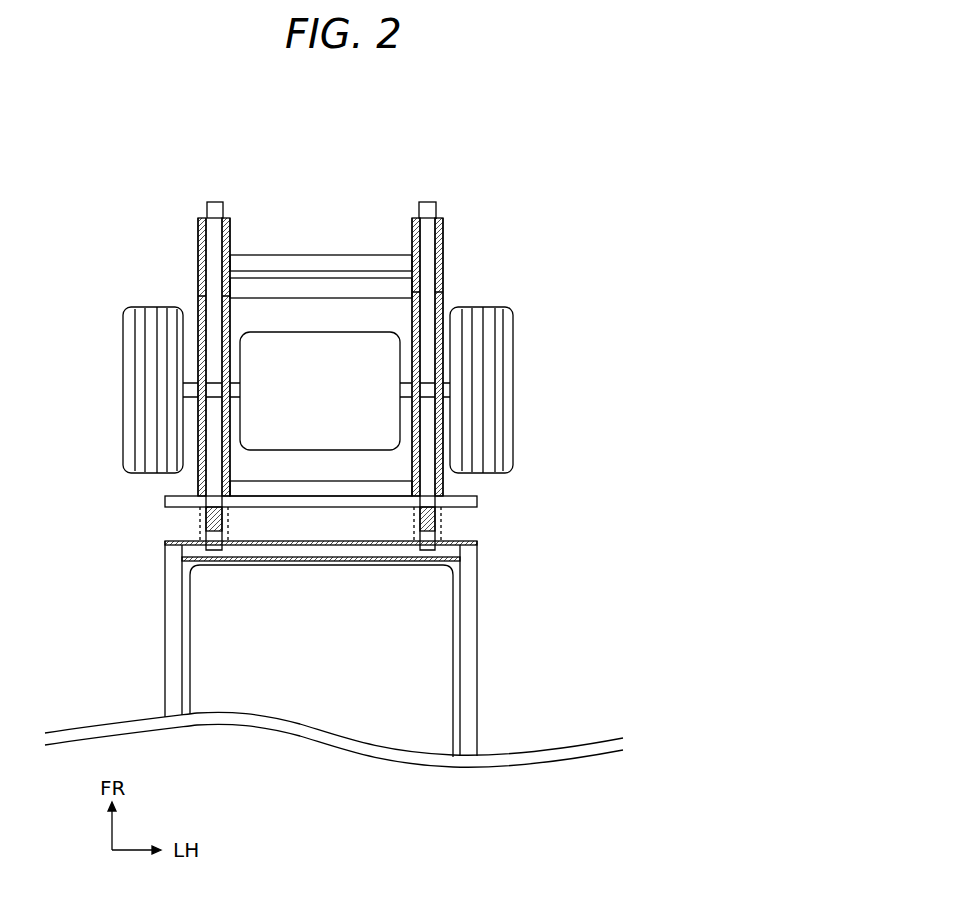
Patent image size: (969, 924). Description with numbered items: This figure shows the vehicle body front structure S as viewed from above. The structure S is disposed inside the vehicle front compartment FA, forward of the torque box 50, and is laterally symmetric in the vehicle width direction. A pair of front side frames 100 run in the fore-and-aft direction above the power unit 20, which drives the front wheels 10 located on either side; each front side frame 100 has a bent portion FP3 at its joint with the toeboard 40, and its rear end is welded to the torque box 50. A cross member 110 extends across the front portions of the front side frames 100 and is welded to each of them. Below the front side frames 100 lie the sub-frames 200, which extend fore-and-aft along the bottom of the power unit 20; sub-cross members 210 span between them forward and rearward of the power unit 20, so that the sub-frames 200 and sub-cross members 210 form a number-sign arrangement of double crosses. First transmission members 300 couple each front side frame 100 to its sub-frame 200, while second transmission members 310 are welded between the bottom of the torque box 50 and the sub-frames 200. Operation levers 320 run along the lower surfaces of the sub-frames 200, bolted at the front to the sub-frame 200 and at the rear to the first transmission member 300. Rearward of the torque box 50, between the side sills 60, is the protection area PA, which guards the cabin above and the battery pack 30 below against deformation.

The front wheels 10 is at (133, 347).
The power unit 20 is at (248, 418).
The battery pack 30 is at (203, 677).
The toeboard 40 is at (470, 503).
The torque box 50 is at (388, 550).
The side sills 60 is at (170, 611).
The front side frames 100 is at (213, 267).
The cross member 110 is at (345, 268).
The sub-frames 200 is at (199, 267).
The sub-cross members 210 is at (262, 293).
The first transmission members 300 is at (235, 521).
The second transmission members 310 is at (197, 517).
The operation levers 320 is at (198, 298).
The vehicle body front structure S is at (658, 134).
The bent portion FP3 is at (187, 493).
The vehicle front compartment FA is at (445, 550).
The protection area PA is at (647, 555).